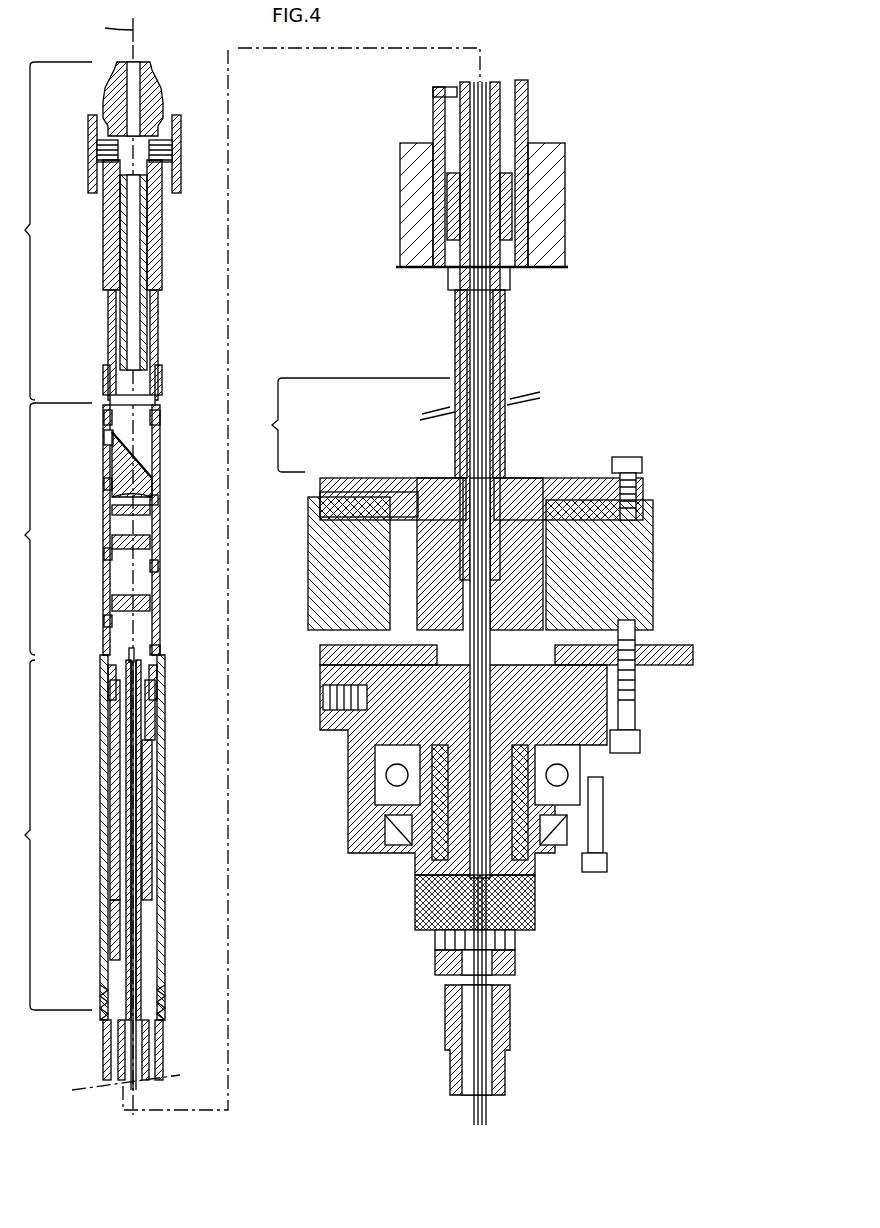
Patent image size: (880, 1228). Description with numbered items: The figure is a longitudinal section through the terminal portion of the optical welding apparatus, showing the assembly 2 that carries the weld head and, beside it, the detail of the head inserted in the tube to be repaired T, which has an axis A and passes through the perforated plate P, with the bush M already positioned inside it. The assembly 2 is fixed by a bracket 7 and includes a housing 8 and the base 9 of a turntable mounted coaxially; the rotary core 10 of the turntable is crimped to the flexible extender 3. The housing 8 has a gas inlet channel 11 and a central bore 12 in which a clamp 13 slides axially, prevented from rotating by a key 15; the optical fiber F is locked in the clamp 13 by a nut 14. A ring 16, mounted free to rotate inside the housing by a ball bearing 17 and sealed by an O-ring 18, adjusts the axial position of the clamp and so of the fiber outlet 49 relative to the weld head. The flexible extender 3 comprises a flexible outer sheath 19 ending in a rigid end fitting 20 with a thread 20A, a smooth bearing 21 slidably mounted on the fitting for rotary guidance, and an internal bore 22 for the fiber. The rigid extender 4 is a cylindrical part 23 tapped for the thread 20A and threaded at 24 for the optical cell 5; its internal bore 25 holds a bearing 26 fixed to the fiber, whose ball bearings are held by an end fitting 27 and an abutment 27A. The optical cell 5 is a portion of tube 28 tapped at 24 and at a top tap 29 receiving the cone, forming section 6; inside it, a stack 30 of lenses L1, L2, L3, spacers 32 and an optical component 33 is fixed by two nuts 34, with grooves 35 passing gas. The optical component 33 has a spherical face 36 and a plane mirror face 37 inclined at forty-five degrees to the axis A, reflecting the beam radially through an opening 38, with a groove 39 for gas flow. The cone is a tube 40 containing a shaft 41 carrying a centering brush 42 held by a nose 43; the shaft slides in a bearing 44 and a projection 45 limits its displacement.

The assembly 2 is at (352, 478).
The flexible extender 3 is at (354, 425).
The rigid extender 4 is at (50, 835).
The optical cell 5 is at (50, 529).
The upper section 6 is at (50, 231).
The bracket 7 is at (660, 656).
The housing 8 is at (372, 735).
The base of turntable 9 is at (330, 532).
The rotary core 10 is at (538, 478).
The gas inlet channel 11 is at (335, 692).
The central bore 12 is at (455, 630).
The clamp 13 is at (440, 955).
The nut 14 is at (445, 1040).
The key 15 is at (522, 630).
The ring 16 is at (415, 905).
The ball bearing 17 is at (375, 760).
The O-ring 18 is at (398, 850).
The flexible outer sheath 19 is at (505, 400).
The rigid end fitting 20 is at (103, 1050).
The thread 20A is at (160, 1000).
The smooth bearing 21 is at (512, 218).
The internal bore 22 is at (515, 130).
The cylindrical part 23 is at (162, 810).
The thread 24 is at (156, 684).
The internal bore 25 is at (152, 730).
The bearing 26 is at (149, 855).
The end fitting 27 is at (112, 700).
The abutment 27A is at (112, 908).
The portion of tube 28 is at (158, 440).
The top tap 29 is at (105, 383).
The stack 30 is at (118, 470).
The spacers 32 is at (108, 552).
The optical component 33 is at (150, 485).
The nuts 34 is at (160, 418).
The grooves 35 is at (158, 566).
The spherical face 36 is at (155, 500).
The plane mirror face 37 is at (134, 460).
The opening 38 is at (107, 437).
The groove 39 is at (108, 484).
The tube 40 is at (158, 220).
The shaft 41 is at (166, 92).
The centering brush 42 is at (160, 151).
The nose 43 is at (155, 135).
The bearing 44 is at (150, 262).
The projection 45 is at (110, 300).
The fiber outlet 49 is at (128, 654).
The axis A is at (111, 29).
The bush M is at (445, 92).
The tube to be repaired T is at (433, 135).
The perforated plate P is at (412, 205).
The optical fiber F is at (480, 1130).
The lens L1 is at (115, 598).
The lens L2 is at (112, 541).
The lens L3 is at (112, 509).